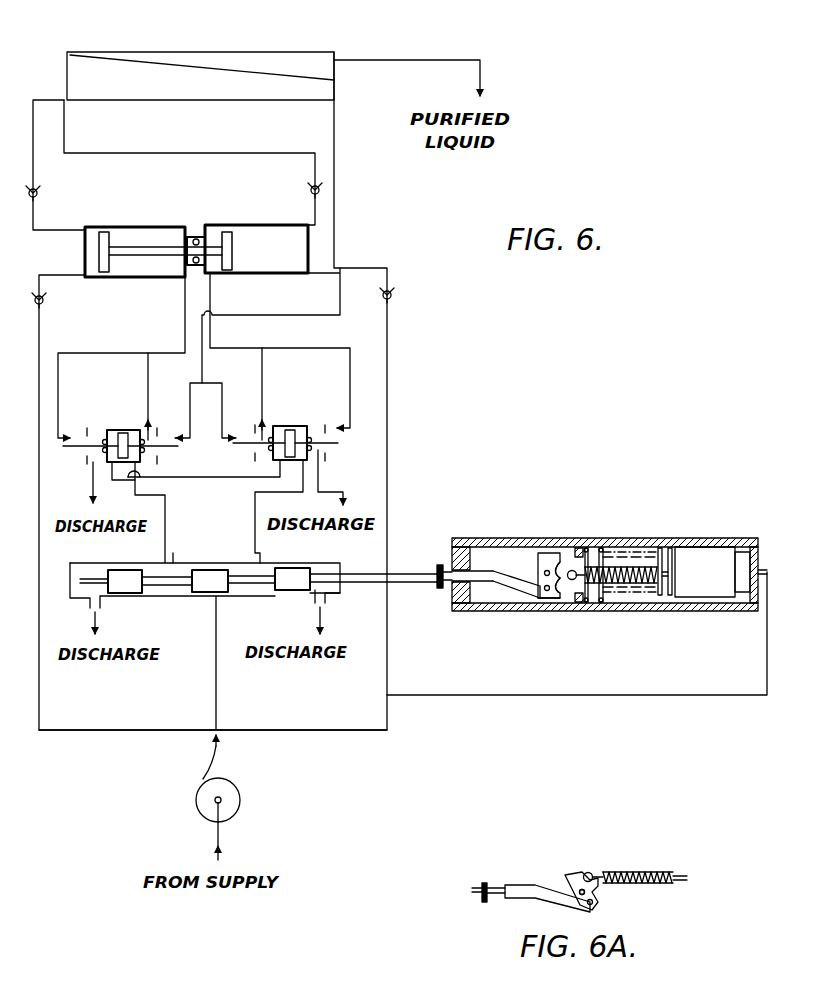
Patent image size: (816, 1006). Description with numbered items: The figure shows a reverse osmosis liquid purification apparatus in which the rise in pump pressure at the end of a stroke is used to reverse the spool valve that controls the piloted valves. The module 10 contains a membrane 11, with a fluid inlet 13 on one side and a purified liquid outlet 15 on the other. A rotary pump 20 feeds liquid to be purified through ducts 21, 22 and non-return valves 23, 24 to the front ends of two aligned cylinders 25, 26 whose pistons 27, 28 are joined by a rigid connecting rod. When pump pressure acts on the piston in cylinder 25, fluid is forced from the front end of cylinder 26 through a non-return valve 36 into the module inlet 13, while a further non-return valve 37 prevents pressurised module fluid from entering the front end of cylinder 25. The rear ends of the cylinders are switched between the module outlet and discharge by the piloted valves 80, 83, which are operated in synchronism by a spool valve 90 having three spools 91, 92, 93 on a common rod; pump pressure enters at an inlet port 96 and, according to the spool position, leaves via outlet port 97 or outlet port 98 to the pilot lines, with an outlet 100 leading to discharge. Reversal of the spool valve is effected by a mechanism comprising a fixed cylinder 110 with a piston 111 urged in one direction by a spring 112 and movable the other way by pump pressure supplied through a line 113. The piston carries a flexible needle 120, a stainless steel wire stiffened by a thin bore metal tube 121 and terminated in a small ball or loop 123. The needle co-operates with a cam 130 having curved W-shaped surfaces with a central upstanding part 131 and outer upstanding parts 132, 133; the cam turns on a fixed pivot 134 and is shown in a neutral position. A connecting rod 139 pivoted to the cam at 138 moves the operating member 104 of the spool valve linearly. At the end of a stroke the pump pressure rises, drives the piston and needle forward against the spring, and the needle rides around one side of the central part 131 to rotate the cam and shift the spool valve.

In FIG. 6, the reverse osmosis liquid purification module 10 is at (171, 46).
In FIG. 6, the membrane 11 is at (220, 68).
In FIG. 6, the fluid inlet 13 is at (48, 98).
In FIG. 6, the purified liquid outlet 15 is at (418, 60).
In FIG. 6, the rotary pump 20 is at (197, 798).
In FIG. 6, the duct 21 is at (113, 729).
In FIG. 6, the duct 22 is at (300, 729).
In FIG. 6, the non-return valve 23 is at (44, 302).
In FIG. 6, the non-return valve 24 is at (392, 297).
In FIG. 6, the cylinder 25 is at (136, 228).
In FIG. 6, the cylinder 26 is at (277, 210).
In FIG. 6, the piston 27 is at (103, 232).
In FIG. 6, the piston 28 is at (225, 232).
In FIG. 6, the non-return valve 36 is at (311, 190).
In FIG. 6, the non-return valve 37 is at (40, 196).
In FIG. 6, the pilot piston and cylinder 80 is at (114, 424).
In FIG. 6, the piston and cylinder 83 is at (290, 420).
In FIG. 6, the spool valve 90 is at (346, 604).
In FIG. 6, the spool 91 is at (124, 594).
In FIG. 6, the spool 92 is at (222, 600).
In FIG. 6, the spool 93 is at (295, 591).
In FIG. 6, the inlet port 96 is at (210, 605).
In FIG. 6, the outlet port 97 is at (165, 555).
In FIG. 6, the outlet port 98 is at (242, 562).
In FIG. 6, the outlet 100 is at (90, 603).
In FIG. 6, the operating member 104 is at (403, 573).
In FIG. 6, the fixed cylinder 110 is at (605, 541).
In FIG. 6, the piston 111 is at (712, 583).
In FIG. 6, the spring 112 is at (664, 541).
In FIG. 6, the line 113 is at (574, 697).
In FIG. 6, the flexible needle 120 is at (665, 598).
In FIG. 6, the thin bore metal tube 121 is at (625, 594).
In FIG. 6A, the thin bore metal tube 121 is at (660, 872).
In FIG. 6, the ball or loop 123 is at (573, 598).
In FIG. 6A, the ball or loop 123 is at (593, 873).
In FIG. 6, the cam 130 is at (547, 552).
In FIG. 6A, the cam 130 is at (572, 872).
In FIG. 6, the central upstanding part 131 is at (510, 603).
In FIG. 6, the outer upstanding part 132 is at (562, 556).
In FIG. 6, the outer upstanding part 133 is at (556, 602).
In FIG. 6, the fixed pivot 134 is at (540, 568).
In FIG. 6A, the fixed pivot 134 is at (600, 893).
In FIG. 6, the pivot 138 is at (540, 598).
In FIG. 6, the connecting rod 139 is at (496, 572).
In FIG. 6A, the connecting rod 139 is at (517, 884).